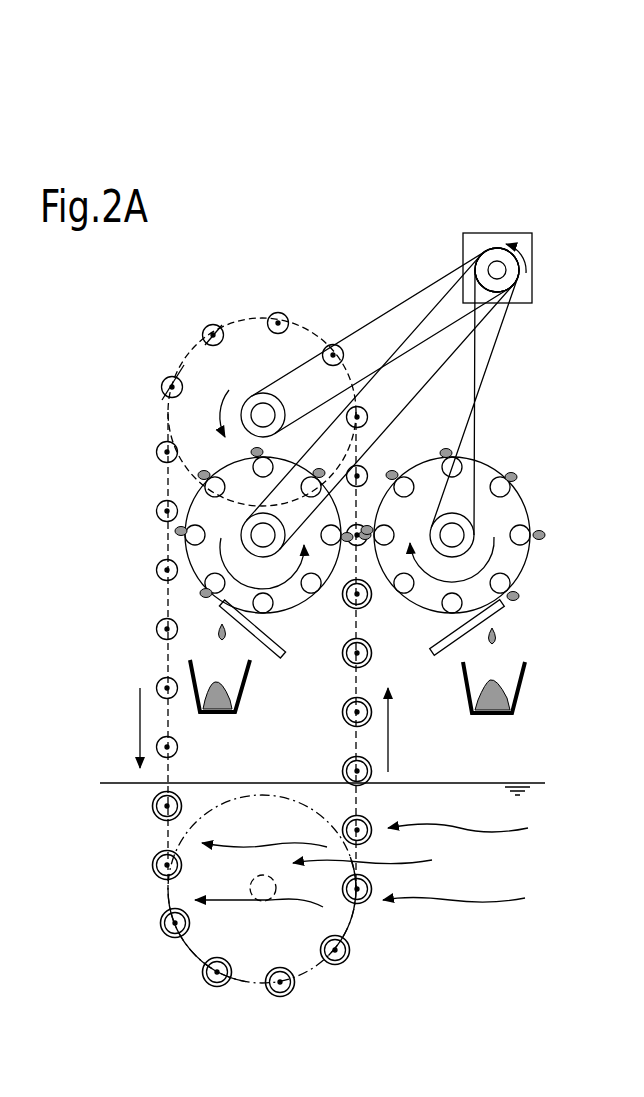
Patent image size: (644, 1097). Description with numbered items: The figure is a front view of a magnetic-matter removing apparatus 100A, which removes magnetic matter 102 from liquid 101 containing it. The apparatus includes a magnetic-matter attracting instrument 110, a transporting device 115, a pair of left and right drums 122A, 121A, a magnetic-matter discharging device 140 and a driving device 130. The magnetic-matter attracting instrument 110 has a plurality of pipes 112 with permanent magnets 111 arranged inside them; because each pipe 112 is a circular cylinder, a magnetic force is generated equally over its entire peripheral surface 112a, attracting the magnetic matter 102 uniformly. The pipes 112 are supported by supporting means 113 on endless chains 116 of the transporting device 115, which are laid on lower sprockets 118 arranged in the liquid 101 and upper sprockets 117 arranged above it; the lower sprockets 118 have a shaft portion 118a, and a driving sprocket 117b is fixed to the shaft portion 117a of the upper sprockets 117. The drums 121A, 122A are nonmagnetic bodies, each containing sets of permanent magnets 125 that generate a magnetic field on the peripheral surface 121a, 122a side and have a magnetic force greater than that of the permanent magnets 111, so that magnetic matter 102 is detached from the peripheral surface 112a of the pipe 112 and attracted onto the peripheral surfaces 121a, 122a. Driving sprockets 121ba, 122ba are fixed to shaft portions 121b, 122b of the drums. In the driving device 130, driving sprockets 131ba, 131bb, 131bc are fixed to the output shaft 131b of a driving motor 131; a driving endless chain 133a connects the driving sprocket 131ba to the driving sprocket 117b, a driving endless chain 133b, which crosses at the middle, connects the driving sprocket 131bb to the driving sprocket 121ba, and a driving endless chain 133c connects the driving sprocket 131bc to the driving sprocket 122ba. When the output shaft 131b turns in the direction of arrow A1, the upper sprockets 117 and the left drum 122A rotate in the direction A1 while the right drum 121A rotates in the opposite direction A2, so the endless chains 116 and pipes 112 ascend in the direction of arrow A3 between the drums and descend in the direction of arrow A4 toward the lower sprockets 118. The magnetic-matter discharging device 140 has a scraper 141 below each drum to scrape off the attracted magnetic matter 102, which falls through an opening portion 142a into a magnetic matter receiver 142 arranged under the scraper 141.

The magnetic-matter removing apparatus 100A is at (162, 313).
The liquid 101 is at (488, 790).
The magnetic matter 102 is at (205, 593).
The magnetic-matter attracting instrument 110 is at (217, 270).
The permanent magnets 111 is at (222, 325).
The pipe 112 is at (200, 327).
The peripheral surface of the pipe 112a is at (208, 326).
The supporting means 113 is at (161, 387).
The transporting device 115 is at (304, 298).
The endless chain 116 is at (362, 811).
The upper sprocket 117 is at (193, 465).
The shaft portion of the upper sprockets 117a is at (276, 410).
The driving sprocket 117b is at (243, 396).
The lower sprocket 118 is at (225, 807).
The shaft portion of the lower sprockets 118a is at (270, 902).
The right drum 121A is at (417, 613).
The peripheral surface of the right drum 121a is at (397, 590).
The shaft portion of the right drum 121b is at (470, 528).
The driving sprocket of the right drum 121ba is at (503, 477).
The left drum 122A is at (297, 613).
The peripheral surface of the left drum 122a is at (318, 592).
The shaft portion of the left drum 122b is at (242, 520).
The driving sprocket of the left drum 122ba is at (185, 531).
The permanent magnets 125 is at (503, 490).
The driving device 130 is at (542, 247).
The driving motor 131 is at (533, 278).
The output shaft 131b is at (498, 262).
The driving sprocket 131ba is at (478, 244).
The driving sprocket 131bb is at (497, 270).
The driving sprocket 131bc is at (497, 270).
The driving endless chain 133a is at (398, 300).
The driving endless chain 133b is at (503, 322).
The driving endless chain 133c is at (405, 462).
The magnetic-matter discharging device 140 is at (288, 697).
The scraper 141 is at (263, 655).
The magnetic matter receiver 142 is at (212, 715).
The opening portion 142a is at (188, 660).
The direction of rotation A1 is at (533, 256).
The direction of rotation A2 is at (486, 562).
The ascending direction A3 is at (388, 753).
The descending direction A4 is at (112, 728).